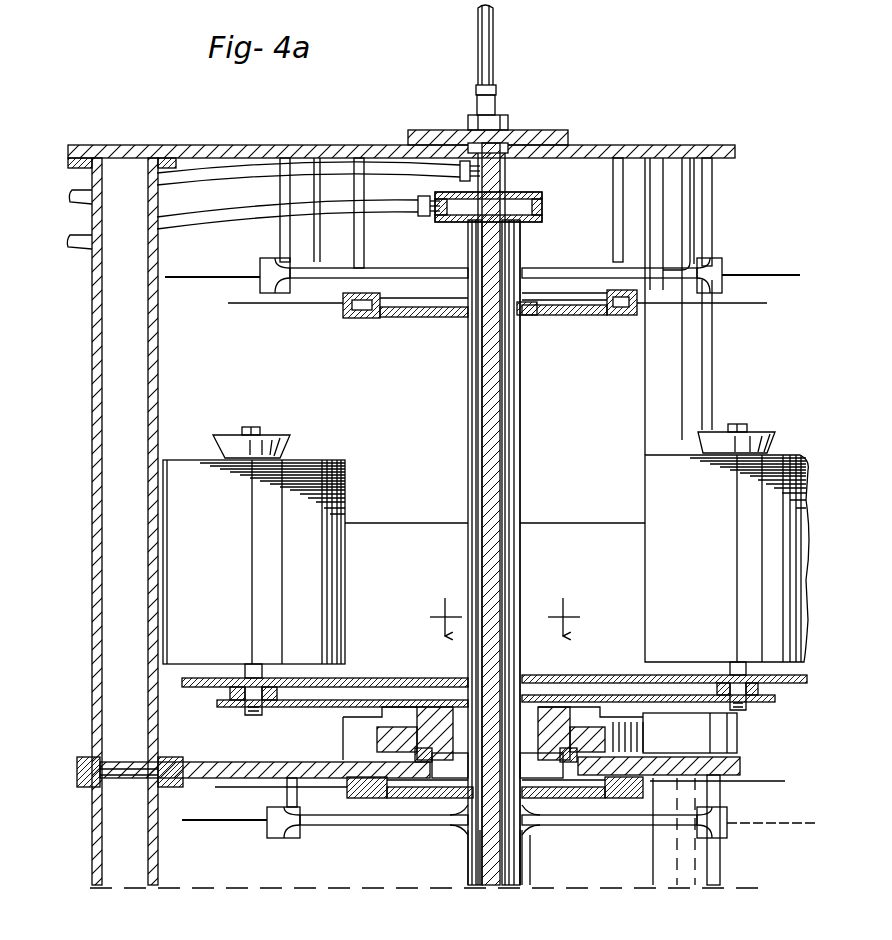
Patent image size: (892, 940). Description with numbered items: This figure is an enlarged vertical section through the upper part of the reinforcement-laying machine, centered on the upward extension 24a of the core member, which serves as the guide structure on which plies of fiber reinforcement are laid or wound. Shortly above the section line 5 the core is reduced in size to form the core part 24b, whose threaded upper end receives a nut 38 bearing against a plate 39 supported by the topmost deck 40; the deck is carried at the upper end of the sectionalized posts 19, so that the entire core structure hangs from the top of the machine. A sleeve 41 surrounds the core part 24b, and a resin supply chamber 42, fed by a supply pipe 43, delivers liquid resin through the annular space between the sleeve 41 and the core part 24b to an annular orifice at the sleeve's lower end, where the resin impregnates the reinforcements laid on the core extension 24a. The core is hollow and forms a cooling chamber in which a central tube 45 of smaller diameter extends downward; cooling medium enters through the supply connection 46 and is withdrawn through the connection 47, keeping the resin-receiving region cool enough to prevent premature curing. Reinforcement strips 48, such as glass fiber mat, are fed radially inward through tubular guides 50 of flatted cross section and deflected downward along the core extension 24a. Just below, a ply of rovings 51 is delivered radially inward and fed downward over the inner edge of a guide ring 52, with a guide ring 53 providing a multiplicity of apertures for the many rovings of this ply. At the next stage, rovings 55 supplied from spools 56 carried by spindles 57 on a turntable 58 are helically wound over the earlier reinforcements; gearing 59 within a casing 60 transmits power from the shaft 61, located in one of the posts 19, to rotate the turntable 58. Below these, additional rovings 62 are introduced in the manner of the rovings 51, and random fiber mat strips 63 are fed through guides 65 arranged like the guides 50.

The sectionalized posts 19 is at (92, 392).
The topmost deck 40 is at (252, 140).
The plate 39 is at (446, 130).
The nut 38 is at (505, 118).
The supply connection 46 is at (496, 60).
The sleeve 41 is at (480, 416).
The central tube 45 is at (505, 475).
The core extension 24a is at (510, 660).
The reduced core part 24b is at (505, 544).
The resin supply chamber 42 is at (538, 222).
The connection 47 is at (76, 192).
The supply pipe 43 is at (76, 236).
The tubular guides 50 is at (318, 285).
The strips 48 is at (212, 274).
The rovings 51 is at (236, 305).
The guide ring 52 is at (524, 320).
The guide ring 53 is at (598, 312).
The spools 56 is at (345, 598).
The rovings 55 is at (430, 522).
The spindles 57 is at (258, 427).
The turntable 58 is at (294, 708).
The gearing 59 is at (390, 735).
The casing 60 is at (736, 738).
The rovings 62 is at (250, 788).
The guides 65 is at (404, 826).
The random fiber mat strips 63 is at (238, 826).
The shaft 61 is at (672, 868).
The section line 5— 5 is at (504, 617).